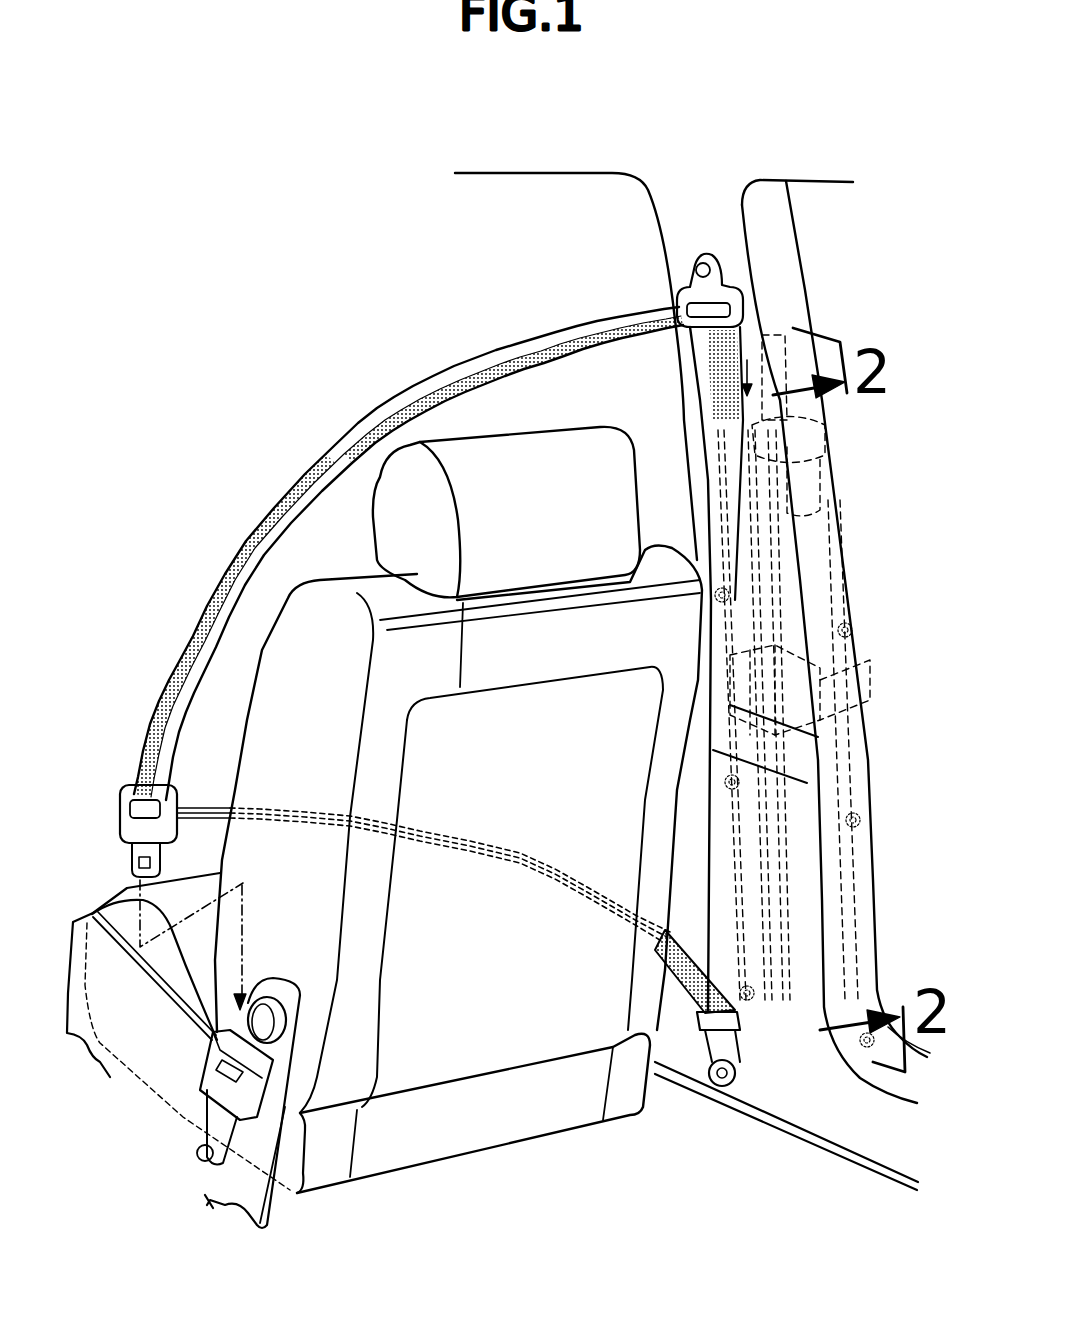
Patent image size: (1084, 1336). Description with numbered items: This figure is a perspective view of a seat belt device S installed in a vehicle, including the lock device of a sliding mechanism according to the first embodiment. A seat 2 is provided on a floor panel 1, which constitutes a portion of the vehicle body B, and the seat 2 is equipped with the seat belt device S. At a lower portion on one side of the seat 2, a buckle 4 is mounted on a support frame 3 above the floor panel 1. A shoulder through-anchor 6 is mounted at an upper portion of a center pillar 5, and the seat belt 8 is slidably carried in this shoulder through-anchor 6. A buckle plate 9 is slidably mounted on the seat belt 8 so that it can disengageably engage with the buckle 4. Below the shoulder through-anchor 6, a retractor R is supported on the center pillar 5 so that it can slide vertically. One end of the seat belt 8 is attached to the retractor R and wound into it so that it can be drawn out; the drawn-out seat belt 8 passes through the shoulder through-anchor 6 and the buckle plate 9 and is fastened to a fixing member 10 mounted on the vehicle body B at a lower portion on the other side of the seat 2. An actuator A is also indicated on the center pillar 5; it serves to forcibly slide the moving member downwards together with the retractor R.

The floor panel 1 is at (698, 1225).
The seat 2 is at (520, 1027).
The support frame 3 is at (117, 1037).
The buckle 4 is at (210, 1087).
The center pillar 5 is at (712, 802).
The shoulder through-anchor 6 is at (730, 297).
The seat belt 8 is at (440, 375).
The buckle plate 9 is at (123, 820).
The fixing member 10 is at (743, 1053).
The actuator A is at (795, 650).
The vehicle body B is at (902, 1129).
The retractor R is at (728, 678).
The seat belt device S is at (347, 431).